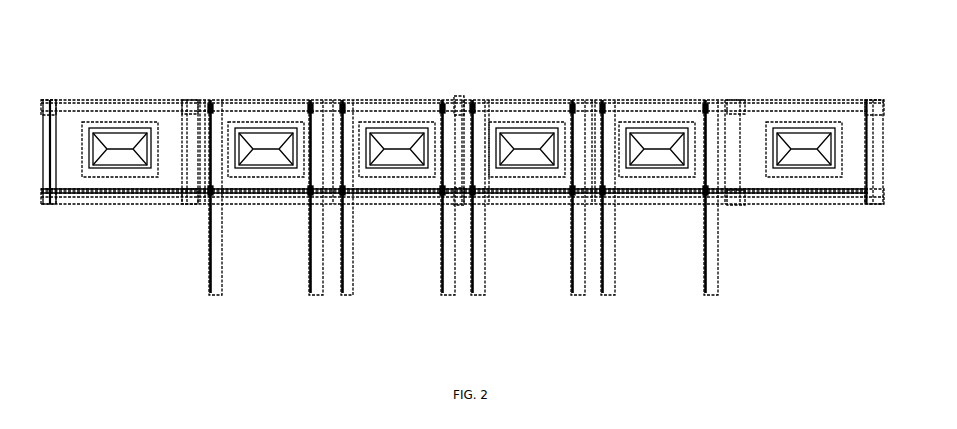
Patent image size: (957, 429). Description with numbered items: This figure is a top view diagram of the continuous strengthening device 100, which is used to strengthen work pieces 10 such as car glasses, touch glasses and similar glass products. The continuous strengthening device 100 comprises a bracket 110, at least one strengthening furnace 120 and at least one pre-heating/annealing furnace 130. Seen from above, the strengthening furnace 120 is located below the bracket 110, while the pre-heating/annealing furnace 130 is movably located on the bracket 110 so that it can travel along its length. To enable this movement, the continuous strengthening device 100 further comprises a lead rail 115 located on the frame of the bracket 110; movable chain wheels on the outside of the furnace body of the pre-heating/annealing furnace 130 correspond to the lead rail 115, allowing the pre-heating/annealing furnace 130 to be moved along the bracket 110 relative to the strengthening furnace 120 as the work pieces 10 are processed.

The continuous strengthening device 100 is at (496, 34).
The work piece 10 is at (390, 103).
The bracket 110 is at (736, 100).
The lead rail 115 is at (535, 99).
The strengthening furnace 120 is at (263, 106).
The pre-heating/annealing furnace 130 is at (134, 104).